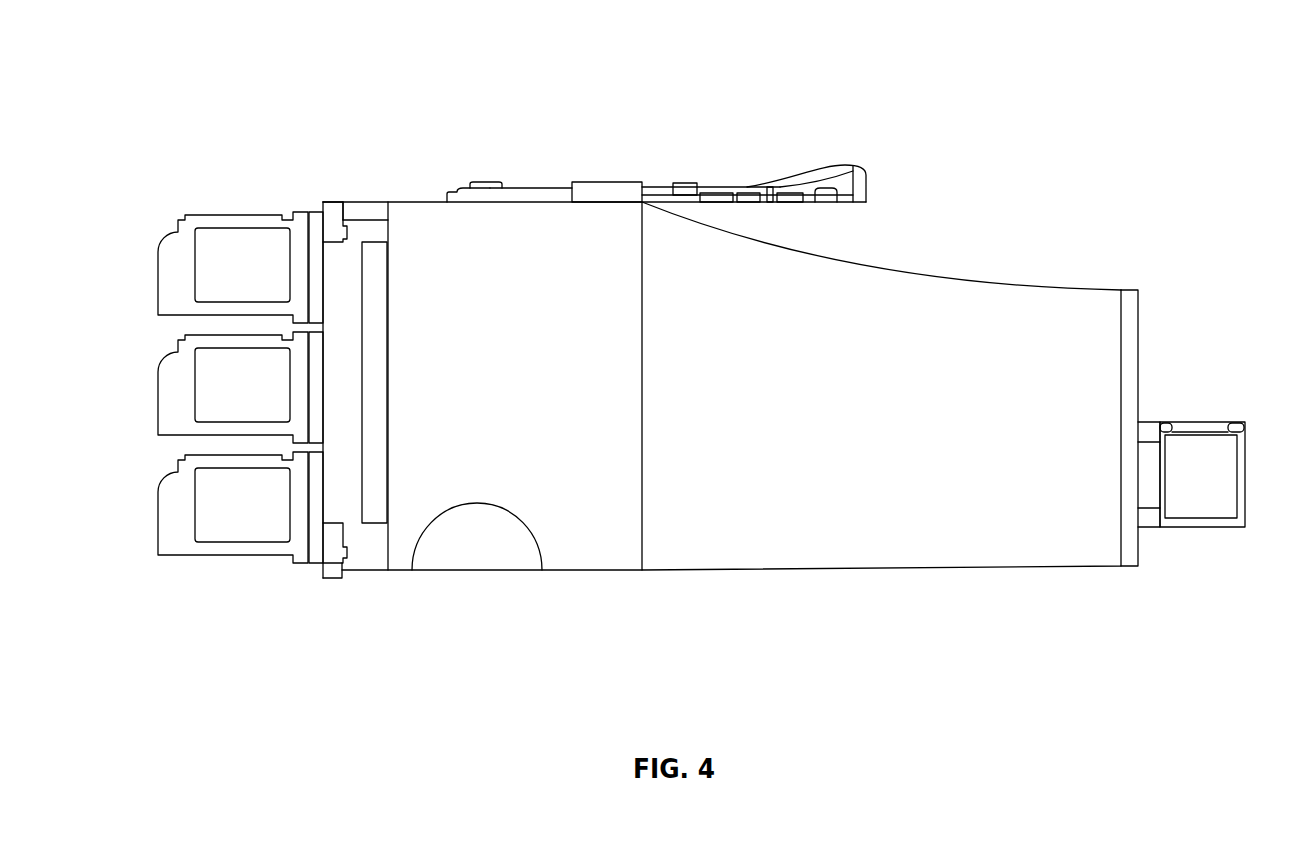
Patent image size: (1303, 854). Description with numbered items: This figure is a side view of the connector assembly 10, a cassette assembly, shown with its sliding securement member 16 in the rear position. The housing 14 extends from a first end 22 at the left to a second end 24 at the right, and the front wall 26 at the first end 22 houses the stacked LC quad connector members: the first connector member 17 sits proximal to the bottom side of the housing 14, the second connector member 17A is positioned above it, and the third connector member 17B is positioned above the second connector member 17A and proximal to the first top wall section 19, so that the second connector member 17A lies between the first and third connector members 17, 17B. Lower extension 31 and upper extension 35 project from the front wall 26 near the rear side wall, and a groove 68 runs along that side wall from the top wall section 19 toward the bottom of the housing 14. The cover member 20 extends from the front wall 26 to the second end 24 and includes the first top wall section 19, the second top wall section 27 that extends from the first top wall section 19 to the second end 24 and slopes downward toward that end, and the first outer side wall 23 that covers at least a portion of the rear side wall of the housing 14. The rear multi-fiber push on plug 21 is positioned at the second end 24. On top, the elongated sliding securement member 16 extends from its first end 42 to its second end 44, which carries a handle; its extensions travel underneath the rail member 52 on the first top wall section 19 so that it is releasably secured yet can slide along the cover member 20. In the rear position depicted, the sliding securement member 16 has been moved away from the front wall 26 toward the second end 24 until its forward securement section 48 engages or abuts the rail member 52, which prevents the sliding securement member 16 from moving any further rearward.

The connector assembly 10 is at (665, 88).
The housing 14 is at (368, 560).
The sliding securement member 16 is at (535, 190).
The first connector member 17 is at (247, 522).
The second connector member 17A is at (263, 398).
The third connector member 17B is at (235, 248).
The first top wall section 19 is at (406, 202).
The cover member 20 is at (958, 283).
The rear multi-fiber push on (MPO) plug 21 is at (1197, 498).
The first end 22 is at (210, 632).
The first outer side wall 23 is at (893, 434).
The second end 24 is at (1136, 608).
The front wall 26 is at (320, 200).
The second top wall section 27 is at (1130, 290).
The lower extension 31 is at (333, 578).
The upper extension 35 is at (333, 202).
The first end of sliding securement member 42 is at (470, 140).
The second end of sliding securement member 44 is at (858, 148).
The forward securement section 48 is at (482, 183).
The rail member 52 is at (608, 185).
The groove 68 is at (340, 370).